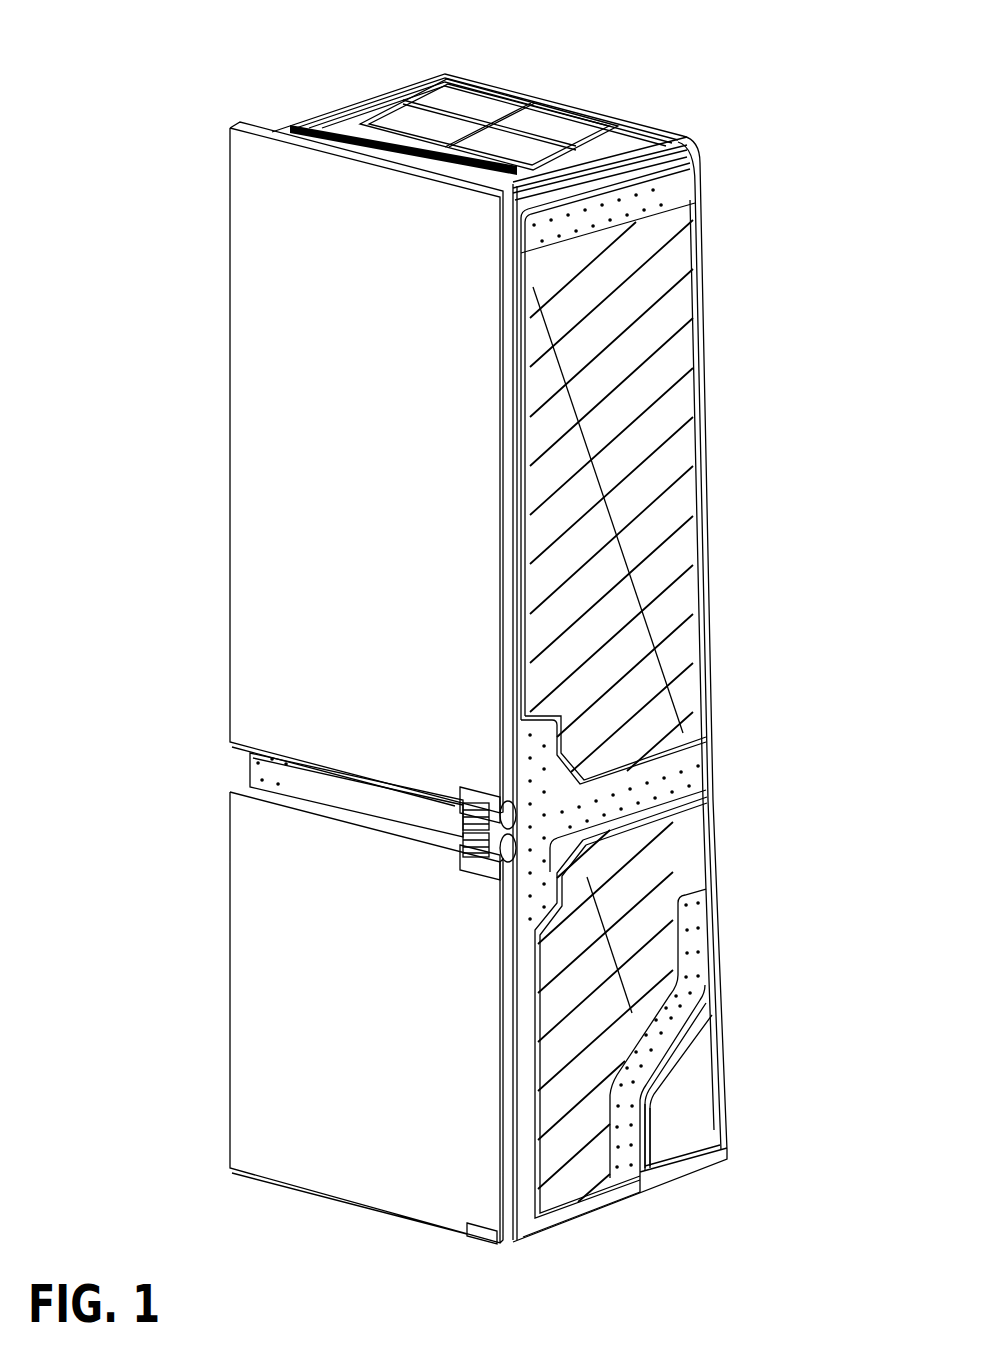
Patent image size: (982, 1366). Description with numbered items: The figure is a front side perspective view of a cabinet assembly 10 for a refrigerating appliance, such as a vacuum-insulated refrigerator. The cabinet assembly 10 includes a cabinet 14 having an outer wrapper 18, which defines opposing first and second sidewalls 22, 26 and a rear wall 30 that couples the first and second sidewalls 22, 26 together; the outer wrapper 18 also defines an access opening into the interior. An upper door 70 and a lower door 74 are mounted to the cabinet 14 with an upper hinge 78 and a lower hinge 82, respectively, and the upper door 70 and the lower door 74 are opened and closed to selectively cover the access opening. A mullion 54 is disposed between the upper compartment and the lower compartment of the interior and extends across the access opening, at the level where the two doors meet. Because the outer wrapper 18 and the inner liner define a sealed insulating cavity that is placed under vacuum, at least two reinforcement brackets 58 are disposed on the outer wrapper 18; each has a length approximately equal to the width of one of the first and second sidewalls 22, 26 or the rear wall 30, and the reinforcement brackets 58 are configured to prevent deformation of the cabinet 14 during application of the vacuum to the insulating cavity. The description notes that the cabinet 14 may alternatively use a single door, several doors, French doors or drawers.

The cabinet assembly 10 is at (802, 49).
The cabinet 14 is at (754, 480).
The outer wrapper 18 is at (678, 252).
The first sidewall 22 is at (352, 108).
The second sidewall 26 is at (667, 212).
The rear wall 30 is at (592, 104).
The mullion 54 is at (257, 773).
The reinforcement brackets 58 is at (551, 91).
The upper door 70 is at (300, 620).
The lower door 74 is at (342, 1002).
The upper hinge 78 is at (456, 800).
The lower hinge 82 is at (456, 852).